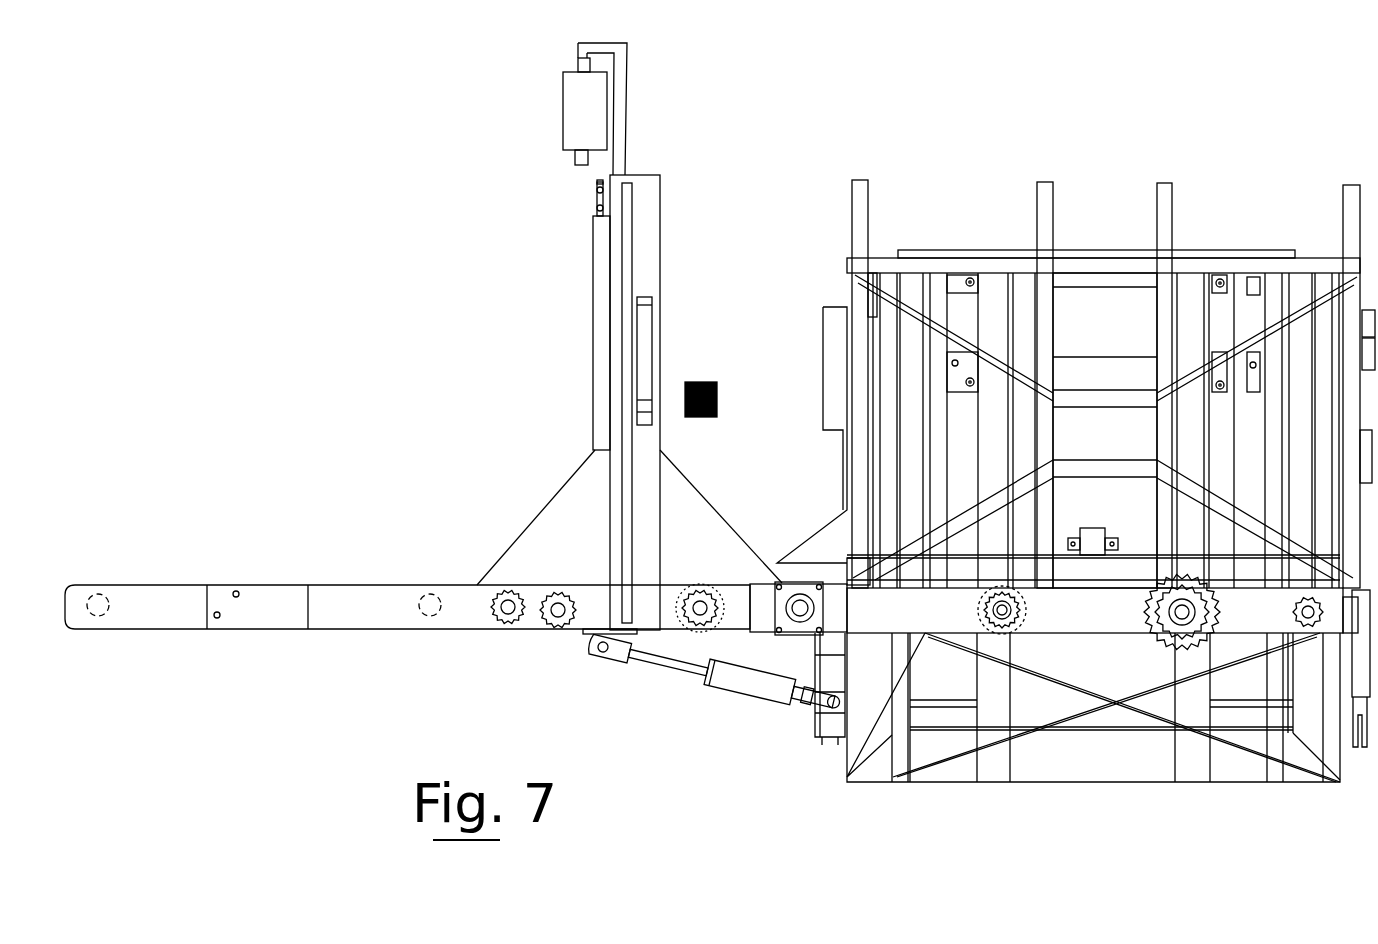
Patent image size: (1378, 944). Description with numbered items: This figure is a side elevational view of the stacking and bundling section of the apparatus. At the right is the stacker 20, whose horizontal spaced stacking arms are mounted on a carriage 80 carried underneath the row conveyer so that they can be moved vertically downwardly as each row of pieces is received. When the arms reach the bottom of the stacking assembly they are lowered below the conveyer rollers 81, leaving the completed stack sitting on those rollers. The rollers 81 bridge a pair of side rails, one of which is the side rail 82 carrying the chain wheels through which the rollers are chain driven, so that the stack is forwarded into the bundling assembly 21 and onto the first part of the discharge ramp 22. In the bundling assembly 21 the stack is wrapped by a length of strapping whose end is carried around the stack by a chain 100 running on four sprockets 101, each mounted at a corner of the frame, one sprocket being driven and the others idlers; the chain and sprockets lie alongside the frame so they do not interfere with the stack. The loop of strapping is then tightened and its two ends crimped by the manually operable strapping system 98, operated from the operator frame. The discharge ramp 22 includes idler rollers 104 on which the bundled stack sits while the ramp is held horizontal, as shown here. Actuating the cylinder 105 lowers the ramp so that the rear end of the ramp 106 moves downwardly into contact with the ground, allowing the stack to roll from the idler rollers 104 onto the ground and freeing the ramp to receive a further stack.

The stacker 20 is at (1240, 233).
The bundling assembly 21 is at (645, 153).
The discharge ramp 22 is at (393, 525).
The carriage 80 is at (1078, 372).
The conveyer rollers 81 is at (1027, 600).
The side rail 82 is at (908, 624).
The strapping system 98 is at (570, 102).
The chain 100 is at (597, 182).
The sprockets 101 is at (595, 203).
The idler rollers 104 is at (100, 600).
The cylinder 105 is at (728, 678).
The rear end of the ramp 106 is at (73, 628).